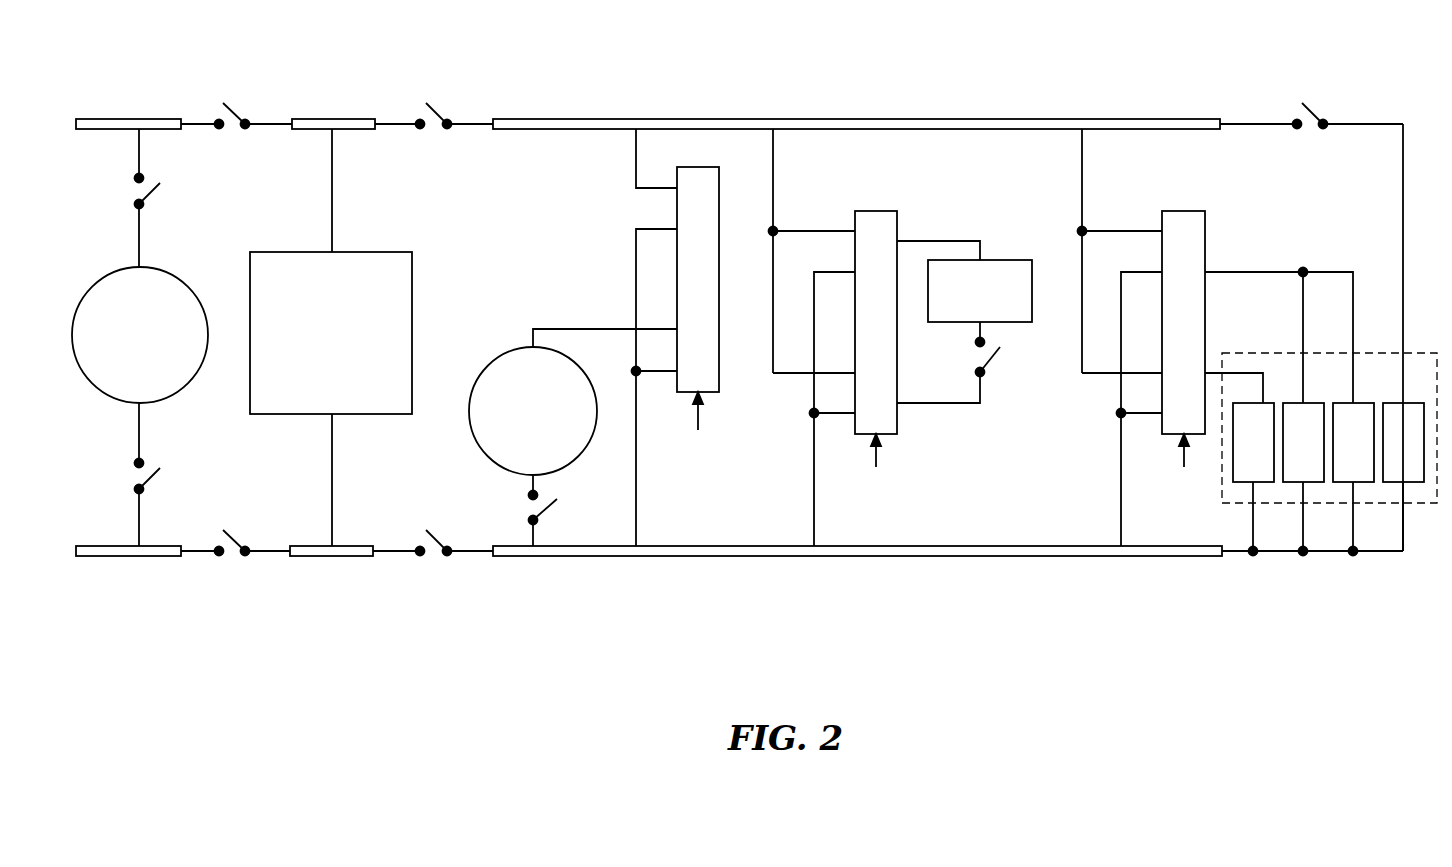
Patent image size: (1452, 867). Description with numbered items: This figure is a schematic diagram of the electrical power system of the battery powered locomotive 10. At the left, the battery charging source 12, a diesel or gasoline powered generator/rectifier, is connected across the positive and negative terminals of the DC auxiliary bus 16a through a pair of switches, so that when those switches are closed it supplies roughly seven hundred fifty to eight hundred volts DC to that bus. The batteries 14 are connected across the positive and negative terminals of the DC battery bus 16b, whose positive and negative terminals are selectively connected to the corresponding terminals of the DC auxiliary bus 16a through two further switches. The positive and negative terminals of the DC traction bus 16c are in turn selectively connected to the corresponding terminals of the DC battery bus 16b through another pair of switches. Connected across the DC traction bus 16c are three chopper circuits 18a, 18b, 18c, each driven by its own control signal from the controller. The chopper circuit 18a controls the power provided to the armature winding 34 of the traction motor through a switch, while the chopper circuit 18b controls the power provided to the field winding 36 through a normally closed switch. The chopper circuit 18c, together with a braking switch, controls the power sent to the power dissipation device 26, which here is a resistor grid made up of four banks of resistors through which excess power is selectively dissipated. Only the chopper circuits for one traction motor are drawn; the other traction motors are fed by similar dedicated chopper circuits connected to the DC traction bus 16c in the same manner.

The locomotive 10 is at (782, 56).
The battery charging source 12 is at (172, 268).
The batteries 14 is at (400, 251).
The DC auxiliary bus 16a is at (165, 129).
The DC battery bus 16b is at (358, 129).
The DC traction bus 16c is at (566, 117).
The chopper circuit 18a is at (720, 184).
The chopper circuit 18b is at (886, 209).
The chopper circuit 18c is at (1182, 209).
The power dissipation device 26 is at (1258, 352).
The armature winding 34 is at (505, 352).
The field winding 36 is at (1012, 259).